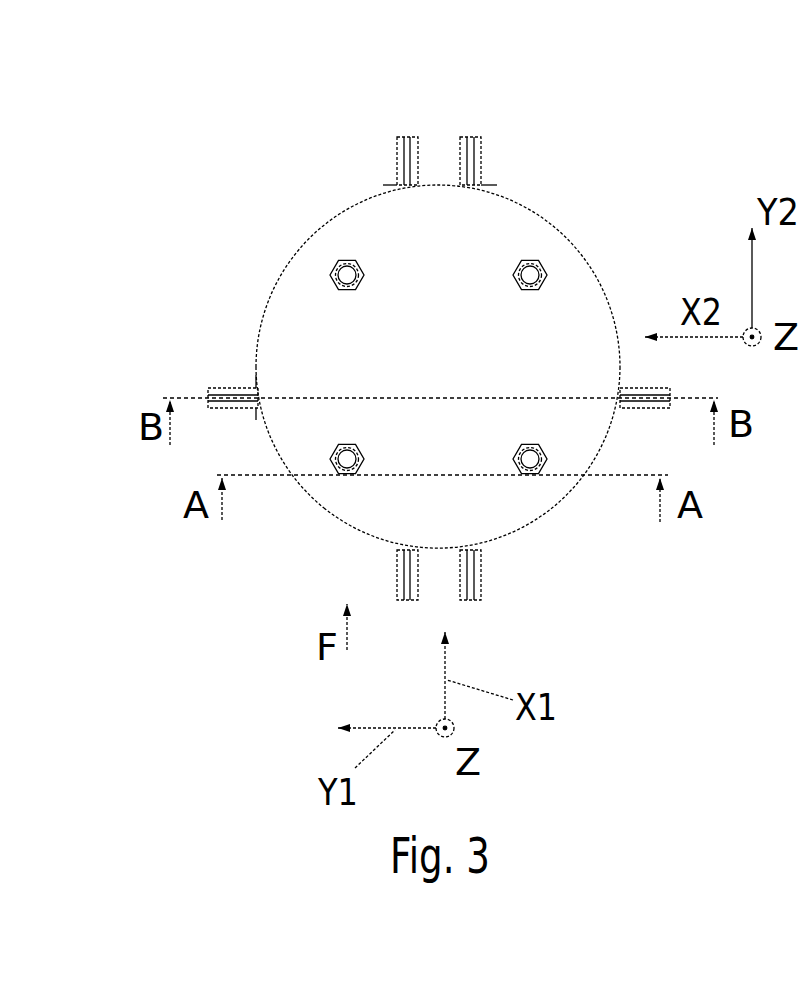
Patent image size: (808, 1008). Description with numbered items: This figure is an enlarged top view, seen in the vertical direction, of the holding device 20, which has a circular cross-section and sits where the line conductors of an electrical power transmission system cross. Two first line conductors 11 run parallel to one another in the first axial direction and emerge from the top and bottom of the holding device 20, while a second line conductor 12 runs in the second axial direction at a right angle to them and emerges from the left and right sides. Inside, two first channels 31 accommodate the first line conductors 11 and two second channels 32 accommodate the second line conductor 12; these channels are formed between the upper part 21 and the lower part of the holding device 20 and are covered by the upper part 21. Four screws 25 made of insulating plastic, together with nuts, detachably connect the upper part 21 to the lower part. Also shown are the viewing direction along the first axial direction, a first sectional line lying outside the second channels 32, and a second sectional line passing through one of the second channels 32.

The first line conductor 11 is at (465, 140).
The second line conductor 12 is at (208, 395).
The holding device 20 is at (215, 205).
The upper part 21 is at (512, 500).
The screws 25 is at (520, 283).
The first channels 31 is at (383, 183).
The second channels 32 is at (247, 372).